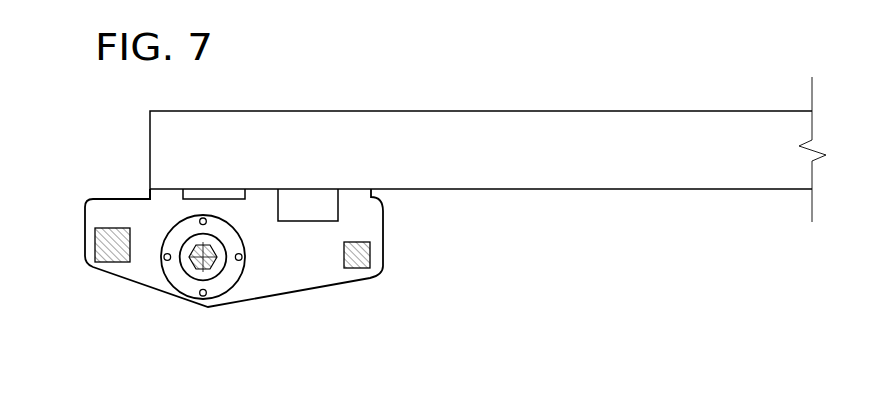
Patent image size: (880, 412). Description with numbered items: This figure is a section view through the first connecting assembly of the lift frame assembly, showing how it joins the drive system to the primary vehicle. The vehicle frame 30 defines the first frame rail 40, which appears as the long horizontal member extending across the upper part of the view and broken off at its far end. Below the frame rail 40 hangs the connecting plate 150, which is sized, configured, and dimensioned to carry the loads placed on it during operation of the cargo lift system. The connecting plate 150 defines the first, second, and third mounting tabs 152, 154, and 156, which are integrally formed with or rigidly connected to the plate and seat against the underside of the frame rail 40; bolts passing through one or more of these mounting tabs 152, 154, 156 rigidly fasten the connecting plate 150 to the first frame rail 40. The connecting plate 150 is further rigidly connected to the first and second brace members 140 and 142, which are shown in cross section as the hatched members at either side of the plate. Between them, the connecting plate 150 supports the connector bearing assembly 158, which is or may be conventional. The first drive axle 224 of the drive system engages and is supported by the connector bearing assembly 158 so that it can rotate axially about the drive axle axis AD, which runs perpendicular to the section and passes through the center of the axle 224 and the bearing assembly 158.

The vehicle frame 30 is at (580, 95).
The first frame rail 40 is at (525, 170).
The first brace member 140 is at (108, 248).
The second brace member 142 is at (357, 255).
The connecting plate 150 is at (310, 273).
The first mounting tab 152 is at (167, 195).
The second mounting tab 154 is at (263, 195).
The third mounting tab 156 is at (359, 193).
The connector bearing assembly 158 is at (156, 268).
The first drive axle 224 is at (218, 264).
The drive axle axis AD is at (190, 266).